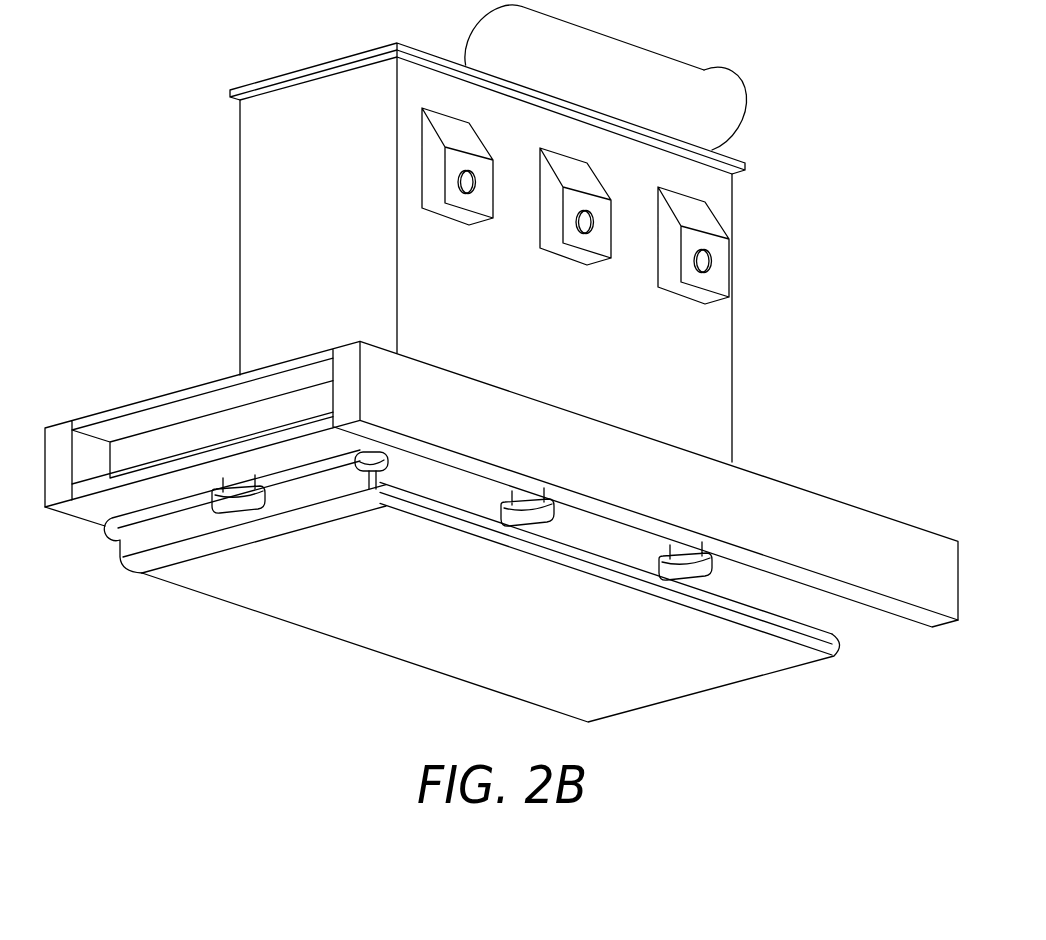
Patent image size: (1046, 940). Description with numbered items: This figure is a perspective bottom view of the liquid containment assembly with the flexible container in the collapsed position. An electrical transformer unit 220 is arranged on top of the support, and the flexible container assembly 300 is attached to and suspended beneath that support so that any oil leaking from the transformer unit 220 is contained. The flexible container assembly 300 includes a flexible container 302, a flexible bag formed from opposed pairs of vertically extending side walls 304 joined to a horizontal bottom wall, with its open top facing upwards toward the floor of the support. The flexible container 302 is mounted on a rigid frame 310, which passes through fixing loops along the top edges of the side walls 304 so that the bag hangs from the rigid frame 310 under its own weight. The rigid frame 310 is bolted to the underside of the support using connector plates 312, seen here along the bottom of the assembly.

The flexible container assembly 300 is at (501, 371).
The electrical transformer unit 220 is at (722, 187).
The side walls 304 is at (827, 508).
The flexible container 302 is at (822, 610).
The rigid frame 310 is at (238, 493).
The connector plates 312 is at (527, 503).